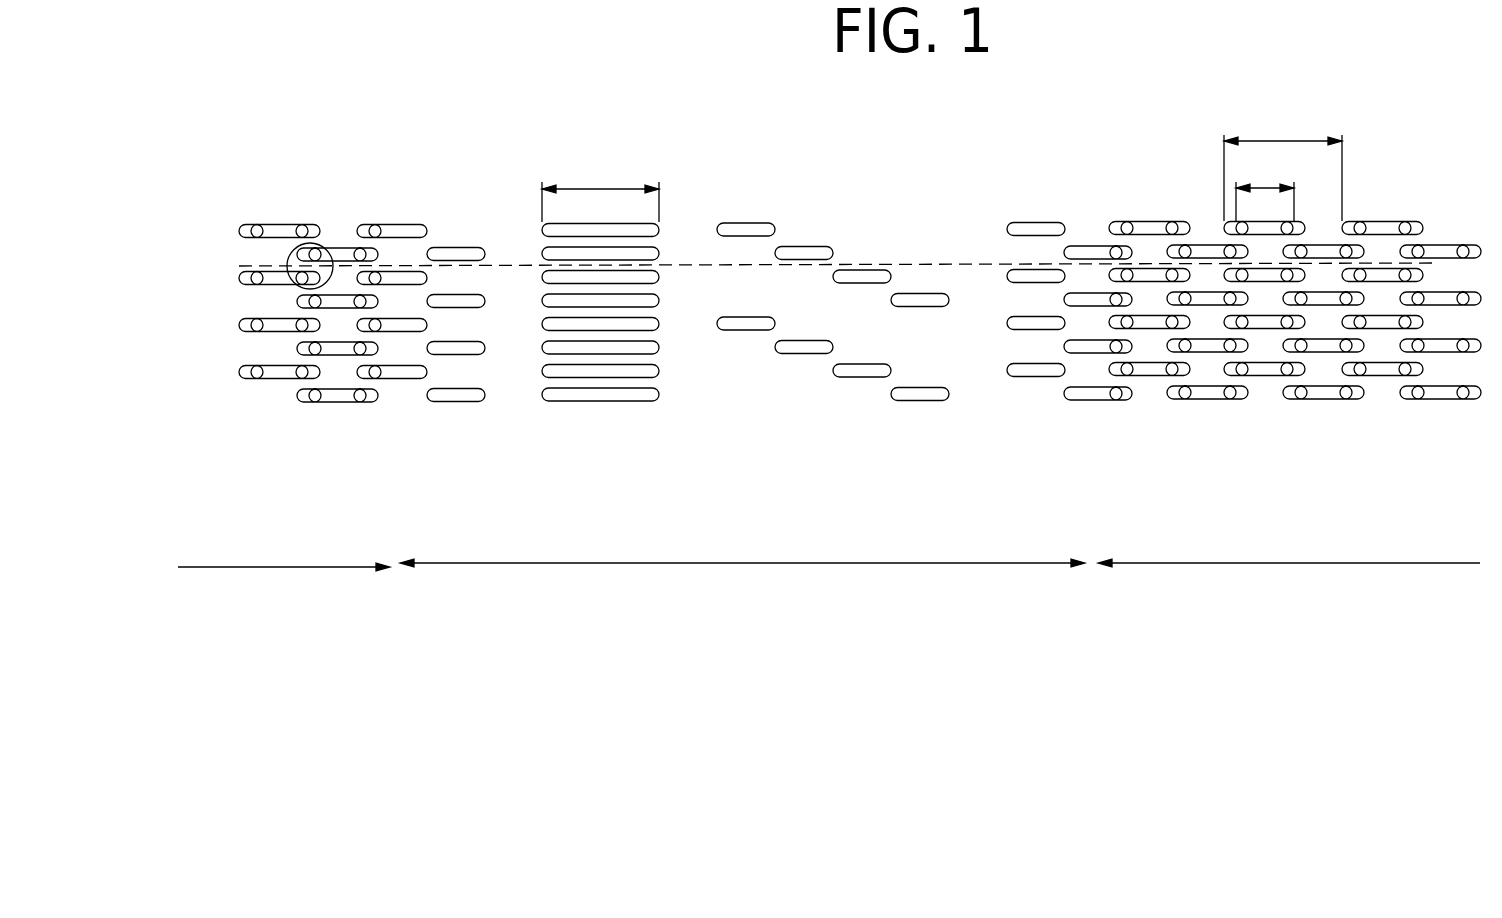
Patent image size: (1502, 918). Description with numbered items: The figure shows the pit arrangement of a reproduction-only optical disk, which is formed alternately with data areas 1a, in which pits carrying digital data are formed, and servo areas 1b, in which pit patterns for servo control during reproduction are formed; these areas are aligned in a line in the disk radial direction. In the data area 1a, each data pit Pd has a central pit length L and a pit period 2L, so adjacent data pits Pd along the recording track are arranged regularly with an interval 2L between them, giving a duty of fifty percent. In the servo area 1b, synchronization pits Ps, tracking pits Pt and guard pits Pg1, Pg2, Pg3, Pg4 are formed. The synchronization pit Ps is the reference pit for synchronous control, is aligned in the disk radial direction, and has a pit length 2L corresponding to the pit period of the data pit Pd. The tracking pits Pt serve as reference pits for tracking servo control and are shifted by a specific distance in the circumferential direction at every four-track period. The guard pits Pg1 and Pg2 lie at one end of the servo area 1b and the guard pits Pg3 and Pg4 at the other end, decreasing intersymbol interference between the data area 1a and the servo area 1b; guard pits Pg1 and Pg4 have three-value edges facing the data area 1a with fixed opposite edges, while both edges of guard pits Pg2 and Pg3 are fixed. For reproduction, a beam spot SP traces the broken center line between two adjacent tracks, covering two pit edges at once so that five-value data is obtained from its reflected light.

The beam spot SP is at (316, 245).
The guard pit Pg1 is at (403, 383).
The guard pit Pg2 is at (462, 408).
The synchronization pit Ps is at (599, 408).
The tracking pit Pt is at (920, 405).
The guard pit Pg3 is at (1035, 380).
The guard pit Pg4 is at (1087, 407).
The data pit Pd is at (1323, 406).
The data area 1a is at (827, 550).
The servo area 1b is at (742, 548).
The pit period 2L is at (942, 168).
The pit length L is at (1265, 191).